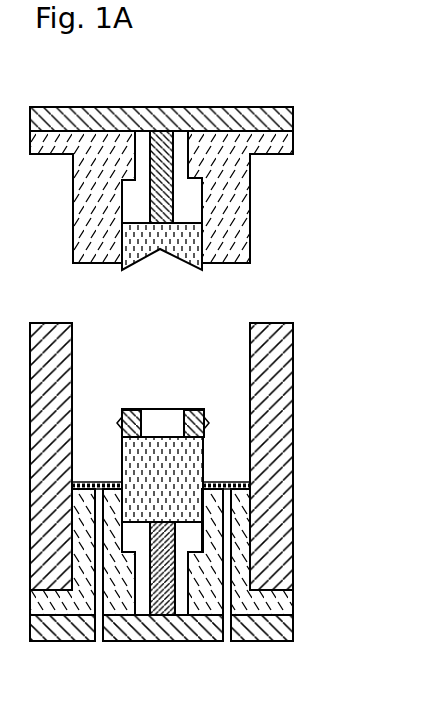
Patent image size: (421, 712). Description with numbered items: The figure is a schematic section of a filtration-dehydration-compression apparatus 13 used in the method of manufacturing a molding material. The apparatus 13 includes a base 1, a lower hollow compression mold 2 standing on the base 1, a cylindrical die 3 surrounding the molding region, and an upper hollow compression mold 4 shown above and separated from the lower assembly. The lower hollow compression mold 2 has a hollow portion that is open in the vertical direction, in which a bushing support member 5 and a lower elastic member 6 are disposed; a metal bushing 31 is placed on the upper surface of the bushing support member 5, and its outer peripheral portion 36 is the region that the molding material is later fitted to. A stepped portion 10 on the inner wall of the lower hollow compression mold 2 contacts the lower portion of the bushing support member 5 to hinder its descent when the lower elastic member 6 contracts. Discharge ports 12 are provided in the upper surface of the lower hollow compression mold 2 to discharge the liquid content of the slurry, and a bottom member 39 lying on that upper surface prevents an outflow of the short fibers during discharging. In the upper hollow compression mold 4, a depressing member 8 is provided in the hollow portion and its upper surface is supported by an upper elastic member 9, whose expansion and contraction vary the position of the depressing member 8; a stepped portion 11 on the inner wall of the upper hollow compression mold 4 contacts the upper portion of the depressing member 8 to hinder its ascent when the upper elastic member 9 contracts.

The base 1 is at (292, 631).
The lower hollow compression mold 2 is at (203, 605).
The cylindrical die 3 is at (270, 553).
The upper hollow compression mold 4 is at (213, 114).
The bushing support member 5 is at (185, 457).
The lower elastic member 6 is at (160, 617).
The depressing member 8 is at (183, 242).
The upper elastic member 9 is at (160, 131).
The stepped portion 10 is at (190, 545).
The stepped portion 11 is at (193, 181).
The discharge ports 12 is at (228, 600).
The filtration-dehydration-compression apparatus 13 is at (206, 167).
The metal bushing 31 is at (233, 387).
The outer peripheral portion 36 is at (203, 412).
The bottom member 39 is at (244, 481).